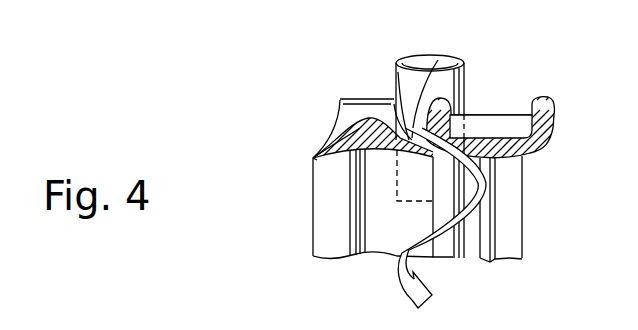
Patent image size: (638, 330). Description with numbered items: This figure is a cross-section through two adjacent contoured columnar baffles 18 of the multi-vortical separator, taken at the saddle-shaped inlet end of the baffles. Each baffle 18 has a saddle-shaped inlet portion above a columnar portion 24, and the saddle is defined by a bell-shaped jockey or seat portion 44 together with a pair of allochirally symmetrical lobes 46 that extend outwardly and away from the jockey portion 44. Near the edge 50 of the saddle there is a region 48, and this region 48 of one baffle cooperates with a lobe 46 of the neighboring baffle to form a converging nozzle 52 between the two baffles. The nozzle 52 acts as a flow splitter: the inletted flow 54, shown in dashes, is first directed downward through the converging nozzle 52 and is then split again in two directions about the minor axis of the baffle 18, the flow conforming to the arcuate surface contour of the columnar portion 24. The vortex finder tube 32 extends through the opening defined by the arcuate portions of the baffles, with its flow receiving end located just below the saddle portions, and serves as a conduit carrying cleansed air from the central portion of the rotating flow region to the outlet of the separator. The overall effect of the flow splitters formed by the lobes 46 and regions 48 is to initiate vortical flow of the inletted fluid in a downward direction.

The contoured columnar baffle 18 is at (328, 212).
The columnar portion 24 is at (313, 242).
The vortex finder tube 32 is at (465, 73).
The bell-shaped jockey portion 44 is at (351, 128).
The lobe 46 is at (375, 78).
The region 48 is at (324, 143).
The edge 50 is at (318, 155).
The converging nozzle 52 is at (437, 61).
The flow 54 is at (444, 230).